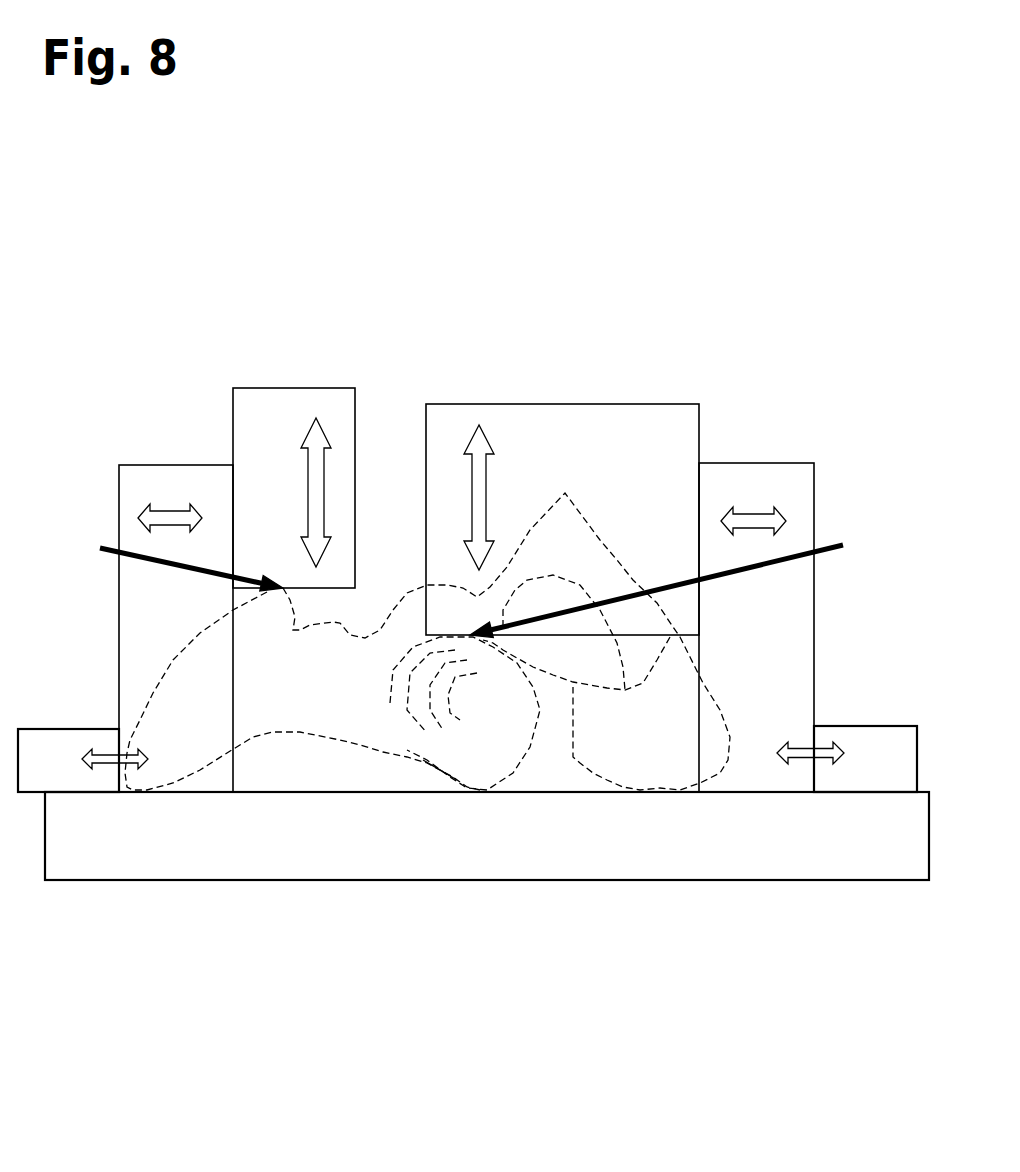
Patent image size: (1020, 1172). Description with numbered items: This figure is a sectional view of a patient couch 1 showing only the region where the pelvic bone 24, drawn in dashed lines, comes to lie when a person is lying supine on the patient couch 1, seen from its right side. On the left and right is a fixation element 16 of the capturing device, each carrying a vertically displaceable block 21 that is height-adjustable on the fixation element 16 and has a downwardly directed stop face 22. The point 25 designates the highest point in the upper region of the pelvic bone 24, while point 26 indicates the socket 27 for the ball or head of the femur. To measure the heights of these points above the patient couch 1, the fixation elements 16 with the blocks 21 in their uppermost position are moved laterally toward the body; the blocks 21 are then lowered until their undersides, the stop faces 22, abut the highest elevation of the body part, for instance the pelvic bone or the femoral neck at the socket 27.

The patient couch 1 is at (293, 833).
The fixation element 16 is at (200, 442).
The vertically displaceable block 21 is at (518, 404).
The stop face 22 is at (267, 592).
The pelvic bone 24 is at (307, 700).
The highest point of the upper pelvic bone 25 is at (161, 555).
The socket point 26 is at (677, 581).
The socket 27 is at (467, 723).